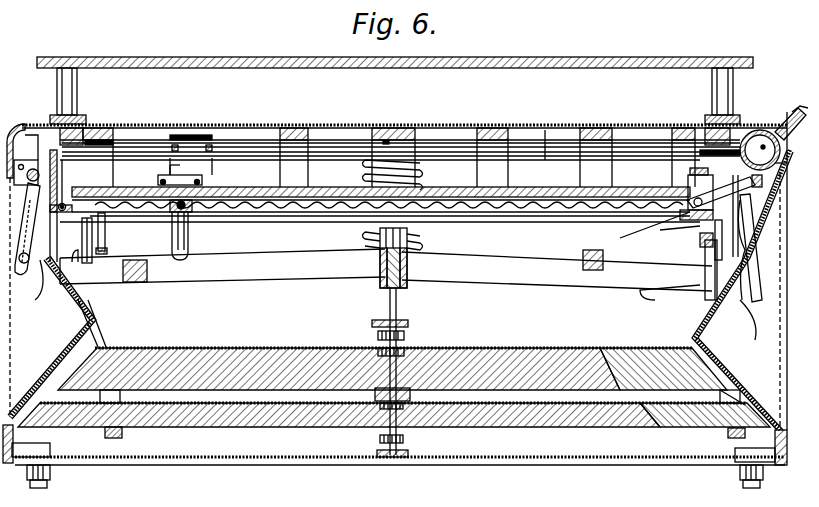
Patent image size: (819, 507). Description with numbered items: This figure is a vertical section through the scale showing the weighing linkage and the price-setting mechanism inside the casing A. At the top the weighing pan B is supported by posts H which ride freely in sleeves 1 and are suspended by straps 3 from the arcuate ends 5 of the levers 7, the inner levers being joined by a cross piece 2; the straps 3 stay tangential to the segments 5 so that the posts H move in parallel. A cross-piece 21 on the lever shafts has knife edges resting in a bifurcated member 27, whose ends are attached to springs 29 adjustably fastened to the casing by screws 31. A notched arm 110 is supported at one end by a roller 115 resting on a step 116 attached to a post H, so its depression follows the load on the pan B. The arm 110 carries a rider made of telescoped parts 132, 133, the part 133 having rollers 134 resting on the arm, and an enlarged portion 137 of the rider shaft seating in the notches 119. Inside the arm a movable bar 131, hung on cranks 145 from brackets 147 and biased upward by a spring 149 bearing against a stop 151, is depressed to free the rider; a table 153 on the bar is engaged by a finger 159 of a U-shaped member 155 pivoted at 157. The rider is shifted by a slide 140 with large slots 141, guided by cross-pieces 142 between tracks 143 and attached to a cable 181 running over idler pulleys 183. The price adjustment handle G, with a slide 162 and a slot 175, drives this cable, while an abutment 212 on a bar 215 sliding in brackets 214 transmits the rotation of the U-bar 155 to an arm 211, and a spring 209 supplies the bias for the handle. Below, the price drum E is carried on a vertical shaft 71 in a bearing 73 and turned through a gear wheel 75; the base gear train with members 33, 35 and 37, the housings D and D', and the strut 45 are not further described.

The weighing pan B is at (197, 48).
The posts H is at (77, 91).
The casing A is at (490, 126).
The sleeves 1 is at (90, 130).
The screws 31 is at (405, 128).
The slide 140 is at (205, 135).
The cross-pieces 142 is at (175, 145).
The tracks 143 is at (252, 155).
The cable 181 is at (545, 140).
The idler pulleys 183 is at (112, 131).
The springs 29 is at (421, 167).
The enlarged portion of shaft 137 is at (210, 192).
The notches 119 is at (252, 210).
The movable bar 131 is at (496, 200).
The notched arm 110 is at (548, 178).
The rider part 133 is at (162, 176).
The rollers 134 is at (182, 162).
The rider part 132 is at (190, 230).
The slots 141 is at (172, 236).
The brackets 147 is at (100, 218).
The cross-piece 21 is at (393, 288).
The bifurcated member 27 is at (409, 264).
The levers 7 is at (282, 272).
The cranks 145 is at (712, 262).
The steps 116 is at (80, 232).
The rollers 115 is at (63, 190).
The left housing D' is at (49, 293).
The arm 211 is at (24, 268).
The spring 209 is at (40, 125).
The U-shaped member 155 is at (30, 130).
The pivot 157 is at (750, 258).
The brackets 214 is at (397, 300).
The bar 215 is at (44, 305).
The straps 3 is at (384, 282).
The arcuate ends 5 is at (90, 243).
The price adjustment handle G is at (790, 122).
The slide 162 is at (793, 100).
The vertical shaft 71 is at (366, 333).
The slot 175 is at (758, 174).
The abutment 212 is at (690, 172).
The table 153 is at (690, 222).
The finger 159 is at (639, 228).
The cross piece 2 is at (585, 238).
The spring 149 is at (704, 244).
The stop 151 is at (722, 266).
The shaft 33 is at (398, 413).
The bearing 73 is at (405, 323).
The gear wheel 75 is at (404, 334).
The gear 35 is at (380, 406).
The gear 37 is at (404, 439).
The base D is at (400, 418).
The drum E is at (540, 368).
The strut 45 is at (112, 332).